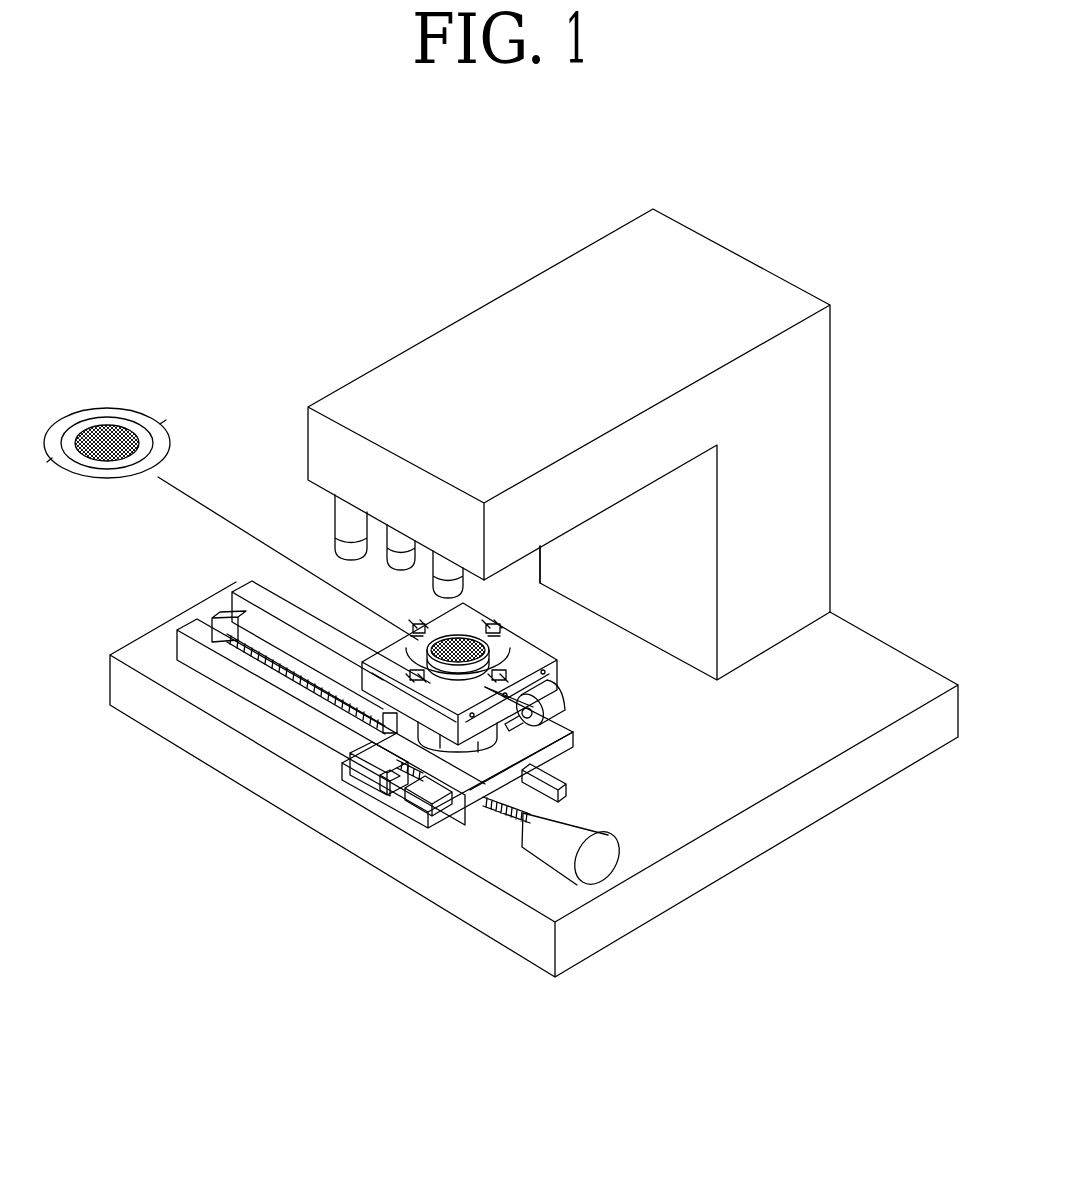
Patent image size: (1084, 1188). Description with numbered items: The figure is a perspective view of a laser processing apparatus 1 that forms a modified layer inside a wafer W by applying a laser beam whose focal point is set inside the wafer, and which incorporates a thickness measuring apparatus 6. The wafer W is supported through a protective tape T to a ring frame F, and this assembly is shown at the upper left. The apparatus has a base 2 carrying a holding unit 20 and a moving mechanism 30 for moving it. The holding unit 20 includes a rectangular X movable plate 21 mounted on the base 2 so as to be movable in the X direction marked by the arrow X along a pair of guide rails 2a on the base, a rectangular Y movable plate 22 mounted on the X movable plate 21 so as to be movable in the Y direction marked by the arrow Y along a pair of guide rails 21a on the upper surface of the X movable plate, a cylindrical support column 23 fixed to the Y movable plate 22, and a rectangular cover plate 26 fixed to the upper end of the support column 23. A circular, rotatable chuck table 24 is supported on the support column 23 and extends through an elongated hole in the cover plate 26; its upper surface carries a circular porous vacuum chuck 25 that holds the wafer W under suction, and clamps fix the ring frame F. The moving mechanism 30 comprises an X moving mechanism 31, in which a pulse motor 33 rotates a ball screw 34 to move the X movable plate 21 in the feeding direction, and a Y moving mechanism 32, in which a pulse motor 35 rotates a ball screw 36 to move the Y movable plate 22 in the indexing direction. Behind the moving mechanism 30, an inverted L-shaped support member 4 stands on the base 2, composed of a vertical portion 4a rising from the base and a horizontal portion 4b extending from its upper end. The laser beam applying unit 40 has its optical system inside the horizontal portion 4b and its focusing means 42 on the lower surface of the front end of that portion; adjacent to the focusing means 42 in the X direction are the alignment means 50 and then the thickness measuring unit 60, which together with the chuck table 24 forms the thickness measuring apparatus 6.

The laser processing apparatus 1 is at (222, 326).
The base 2 is at (880, 660).
The guide rails 2a is at (232, 588).
The support member 4 is at (625, 444).
The vertical portion 4a is at (810, 410).
The horizontal portion 4b is at (663, 452).
The thickness measuring apparatus 6 is at (471, 595).
The holding unit 20 is at (365, 814).
The X movable plate 21 is at (397, 785).
The guide rails 21a is at (408, 678).
The Y movable plate 22 is at (484, 700).
The support column 23 is at (454, 856).
The chuck table 24 is at (420, 815).
The vacuum chuck 25 is at (362, 682).
The cover plate 26 is at (362, 665).
The moving mechanism 30 is at (602, 786).
The X moving mechanism 31 is at (582, 826).
The Y moving mechanism 32 is at (576, 735).
The pulse motor 33 is at (575, 845).
The ball screw 34 is at (552, 775).
The pulse motor 35 is at (545, 700).
The ball screw 36 is at (636, 692).
The laser beam applying unit 40 is at (351, 544).
The focusing means 42 is at (340, 537).
The alignment means 50 is at (400, 561).
The thickness measuring unit 60 is at (440, 575).
The wafer W is at (114, 428).
The protective tape T is at (125, 409).
The ring frame F is at (231, 495).
The X direction X is at (137, 895).
The Y direction Y is at (738, 925).